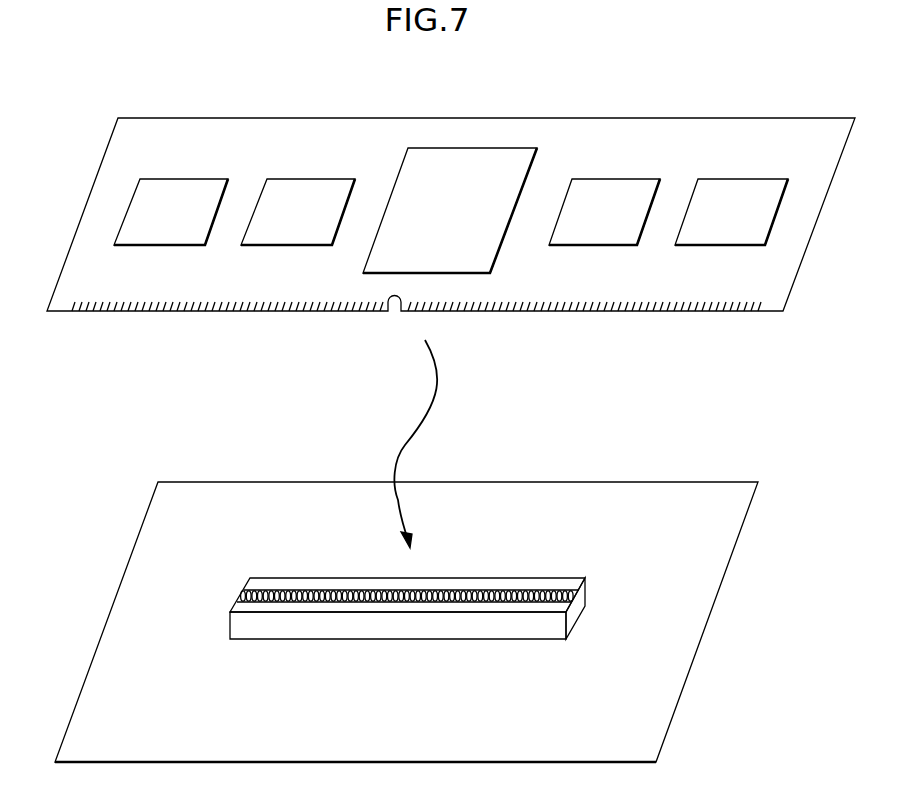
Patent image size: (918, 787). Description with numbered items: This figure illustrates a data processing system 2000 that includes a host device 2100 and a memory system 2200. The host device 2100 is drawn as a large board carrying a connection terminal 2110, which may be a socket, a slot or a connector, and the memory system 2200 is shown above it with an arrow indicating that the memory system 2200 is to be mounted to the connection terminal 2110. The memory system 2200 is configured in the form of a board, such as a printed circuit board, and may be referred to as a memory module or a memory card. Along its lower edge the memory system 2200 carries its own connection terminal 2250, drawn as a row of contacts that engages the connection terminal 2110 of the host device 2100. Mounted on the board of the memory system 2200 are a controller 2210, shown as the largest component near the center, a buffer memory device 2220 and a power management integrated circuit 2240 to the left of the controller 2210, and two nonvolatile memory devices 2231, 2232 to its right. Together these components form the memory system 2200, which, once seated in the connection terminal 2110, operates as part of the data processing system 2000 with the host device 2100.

The data processing system 2000 is at (92, 75).
The memory system 2200 is at (451, 214).
The connection terminal 2250 is at (95, 312).
The power management integrated circuit (PMIC) 2240 is at (171, 212).
The buffer memory device 2220 is at (298, 212).
The controller 2210 is at (450, 210).
The nonvolatile memory device 2231 is at (604, 212).
The nonvolatile memory device 2232 is at (731, 212).
The host device 2100 is at (406, 622).
The connection terminal 2110 is at (587, 590).